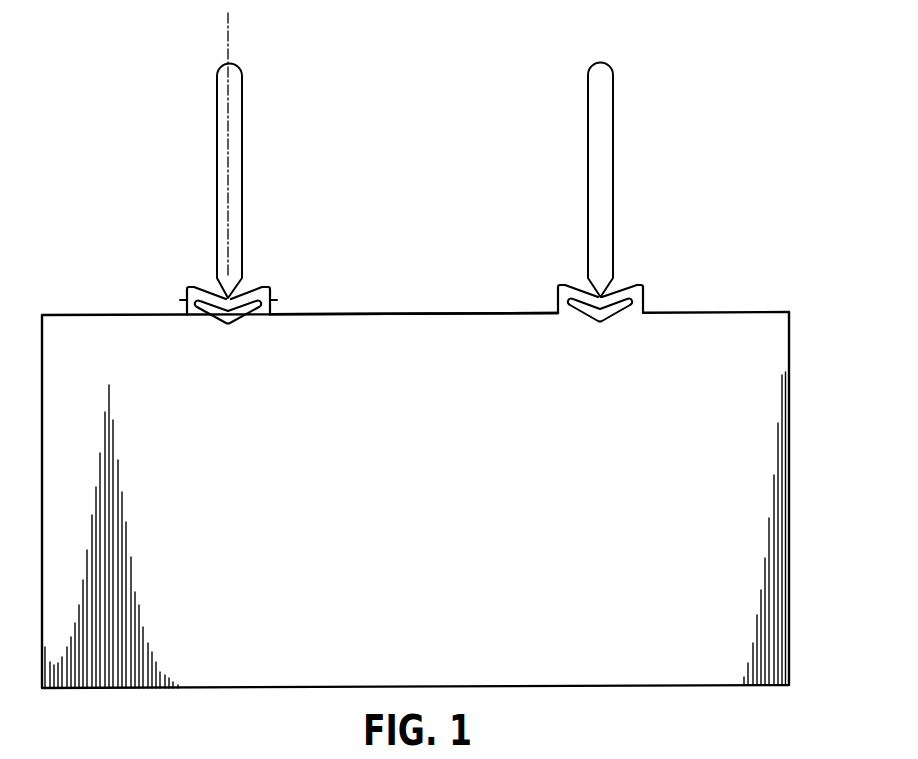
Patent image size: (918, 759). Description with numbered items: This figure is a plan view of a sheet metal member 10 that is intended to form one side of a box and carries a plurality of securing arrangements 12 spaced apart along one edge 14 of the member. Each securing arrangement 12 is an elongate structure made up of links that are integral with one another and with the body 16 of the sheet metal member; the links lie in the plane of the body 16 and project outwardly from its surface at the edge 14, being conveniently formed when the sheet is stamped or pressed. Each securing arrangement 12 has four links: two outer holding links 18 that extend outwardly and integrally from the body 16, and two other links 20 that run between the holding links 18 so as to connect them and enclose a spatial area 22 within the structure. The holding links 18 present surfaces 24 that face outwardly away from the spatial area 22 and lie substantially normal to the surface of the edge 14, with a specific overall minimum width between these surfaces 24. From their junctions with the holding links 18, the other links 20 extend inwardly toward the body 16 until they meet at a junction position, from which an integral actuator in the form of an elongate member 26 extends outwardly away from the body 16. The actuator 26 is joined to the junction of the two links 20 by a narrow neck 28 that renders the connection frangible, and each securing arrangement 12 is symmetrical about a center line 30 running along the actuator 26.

The sheet metal member 10 is at (746, 274).
The securing arrangement 12 is at (366, 170).
The edge 14 is at (412, 312).
The body 16 is at (480, 425).
The outer holding link 18 is at (186, 290).
The other link 20 is at (195, 285).
The spatial area 22 is at (228, 316).
The surface 24 is at (186, 300).
The elongate member 26 is at (217, 170).
The narrow neck 28 is at (228, 290).
The center line 30 is at (229, 50).